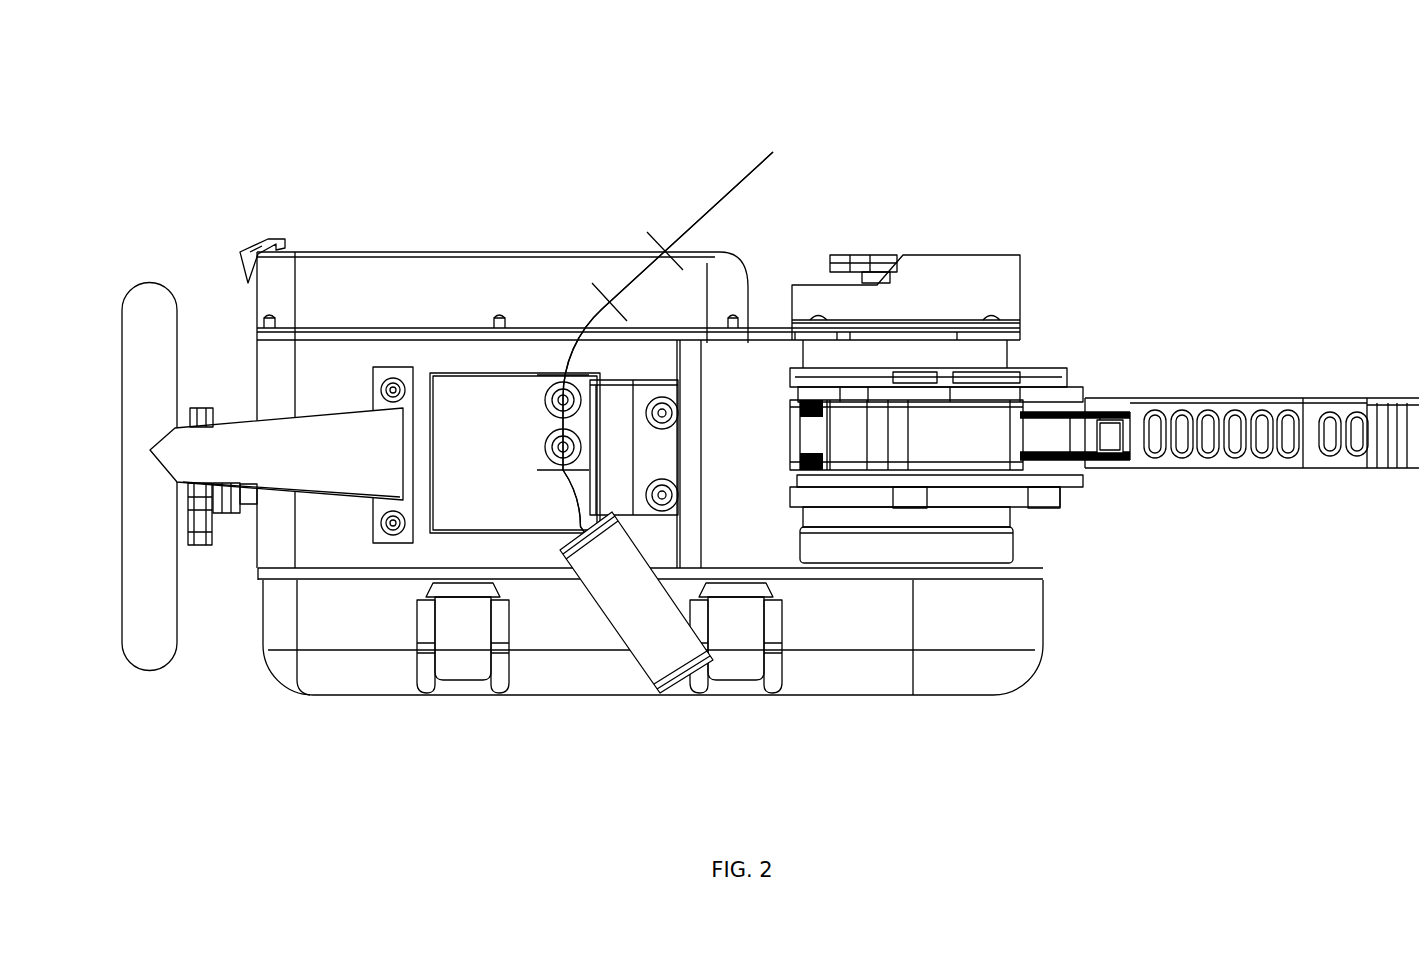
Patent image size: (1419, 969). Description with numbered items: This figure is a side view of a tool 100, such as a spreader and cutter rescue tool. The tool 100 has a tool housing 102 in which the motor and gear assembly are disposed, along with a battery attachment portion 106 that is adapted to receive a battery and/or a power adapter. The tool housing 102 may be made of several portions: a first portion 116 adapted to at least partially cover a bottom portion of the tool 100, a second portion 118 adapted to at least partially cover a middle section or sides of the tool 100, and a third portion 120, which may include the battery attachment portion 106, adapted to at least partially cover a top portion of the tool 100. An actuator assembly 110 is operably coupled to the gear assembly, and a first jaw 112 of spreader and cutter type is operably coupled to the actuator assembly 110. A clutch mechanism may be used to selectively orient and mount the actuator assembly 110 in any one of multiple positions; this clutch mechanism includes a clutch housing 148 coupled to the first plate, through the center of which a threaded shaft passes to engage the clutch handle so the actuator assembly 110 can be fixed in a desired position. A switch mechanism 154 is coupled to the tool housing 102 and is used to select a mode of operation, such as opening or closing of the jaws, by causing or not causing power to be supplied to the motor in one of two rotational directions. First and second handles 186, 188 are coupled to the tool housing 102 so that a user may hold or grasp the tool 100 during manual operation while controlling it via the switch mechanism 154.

The tool 100 is at (739, 407).
The tool housing 102 is at (650, 666).
The battery attachment portion 106 is at (448, 252).
The actuator assembly 110 is at (1060, 530).
The first jaw 112 is at (1189, 470).
The first portion 116 is at (955, 690).
The second portion 118 is at (427, 555).
The third portion 120 is at (257, 332).
The clutch housing 148 is at (1012, 292).
The switch mechanism 154 is at (206, 546).
The first handle 186 is at (137, 615).
The second handle 188 is at (724, 178).